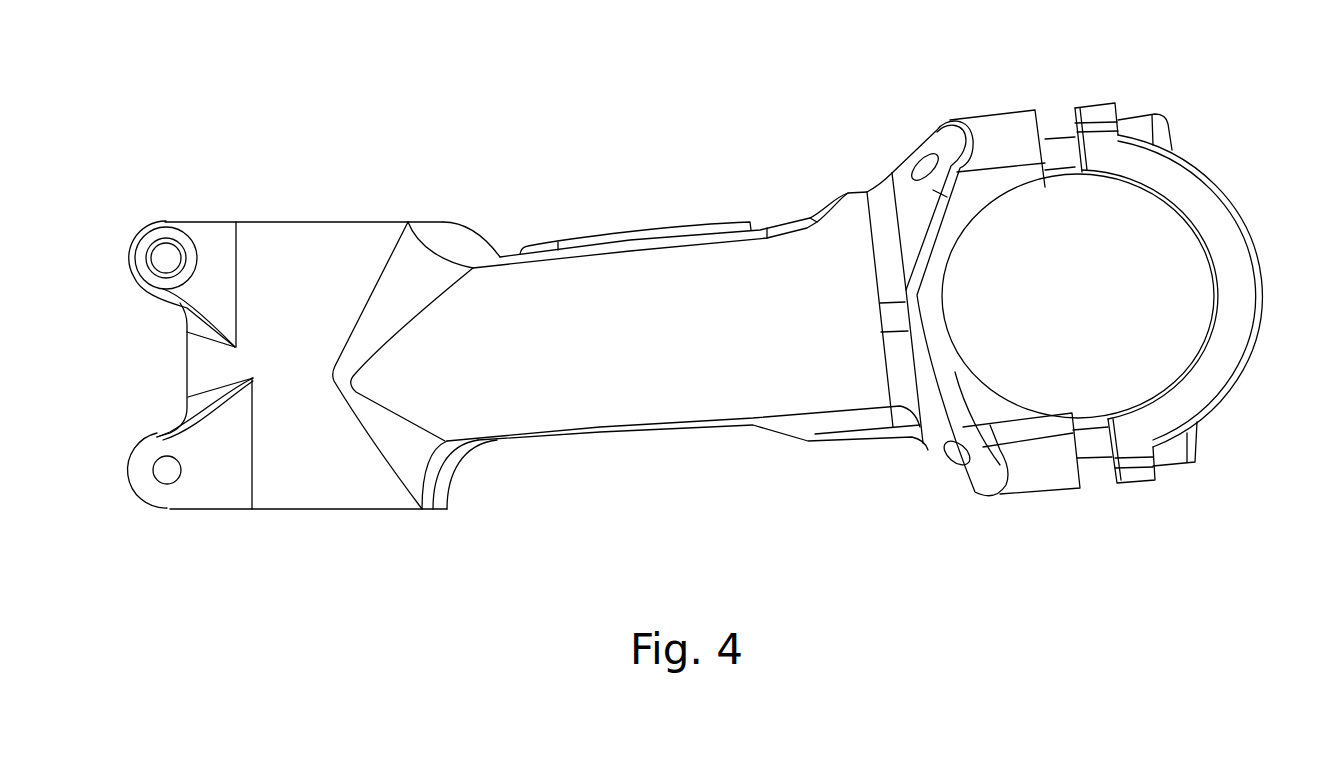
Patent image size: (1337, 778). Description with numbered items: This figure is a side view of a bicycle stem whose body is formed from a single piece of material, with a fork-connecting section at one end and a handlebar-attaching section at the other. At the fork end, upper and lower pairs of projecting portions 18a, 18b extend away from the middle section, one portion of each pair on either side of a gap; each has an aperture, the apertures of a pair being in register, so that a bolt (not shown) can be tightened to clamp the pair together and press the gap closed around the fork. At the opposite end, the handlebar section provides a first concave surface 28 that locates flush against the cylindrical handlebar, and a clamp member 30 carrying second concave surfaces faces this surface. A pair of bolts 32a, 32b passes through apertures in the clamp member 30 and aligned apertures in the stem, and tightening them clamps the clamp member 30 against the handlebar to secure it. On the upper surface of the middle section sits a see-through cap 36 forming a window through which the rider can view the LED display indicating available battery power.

The upper pair of projecting portions 18a is at (184, 222).
The lower pair of projecting portions 18b is at (157, 497).
The first concave surface 28 is at (988, 392).
The clamp member 30 is at (1264, 266).
The bolt 32a is at (1137, 128).
The bolt 32b is at (1099, 447).
The see-through cap 36 is at (626, 233).